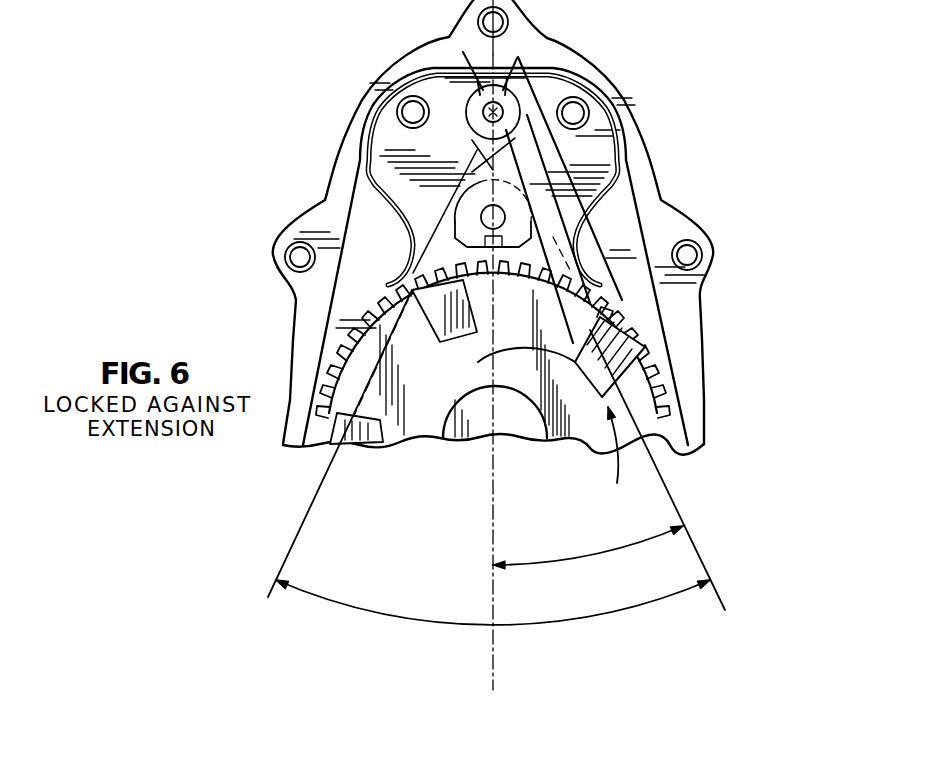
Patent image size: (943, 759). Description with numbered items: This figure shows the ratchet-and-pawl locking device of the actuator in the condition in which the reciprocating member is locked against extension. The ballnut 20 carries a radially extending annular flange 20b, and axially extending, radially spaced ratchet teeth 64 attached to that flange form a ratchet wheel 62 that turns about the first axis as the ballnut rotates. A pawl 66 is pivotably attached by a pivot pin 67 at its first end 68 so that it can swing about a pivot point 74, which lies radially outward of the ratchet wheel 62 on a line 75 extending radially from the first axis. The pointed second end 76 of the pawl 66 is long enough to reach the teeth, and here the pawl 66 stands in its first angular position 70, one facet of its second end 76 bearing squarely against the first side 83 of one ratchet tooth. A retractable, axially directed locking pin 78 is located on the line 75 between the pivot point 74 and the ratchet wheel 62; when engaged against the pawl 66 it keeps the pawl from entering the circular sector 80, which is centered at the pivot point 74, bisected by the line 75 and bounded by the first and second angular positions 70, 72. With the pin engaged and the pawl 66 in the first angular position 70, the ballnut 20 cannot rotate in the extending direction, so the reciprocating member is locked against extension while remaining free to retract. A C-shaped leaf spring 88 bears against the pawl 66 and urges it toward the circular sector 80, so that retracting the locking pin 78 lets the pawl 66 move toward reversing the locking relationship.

The ballnut 20 is at (452, 440).
The annular flange 20b is at (393, 444).
The ratchet wheel 62 is at (613, 458).
The ratchet teeth 64 is at (648, 348).
The pawl 66 is at (642, 131).
The pivot pin 67 is at (483, 108).
The first end 68 is at (507, 97).
The first angular position 70 is at (693, 540).
The second angular position 72 is at (293, 535).
The pivot point 74 is at (589, 114).
The line 75 is at (495, 672).
The second end 76 is at (560, 322).
The locking pin 78 is at (477, 220).
The circular sector 80 is at (455, 605).
The first side 83 is at (525, 367).
The C-shaped leaf spring 88 is at (625, 175).